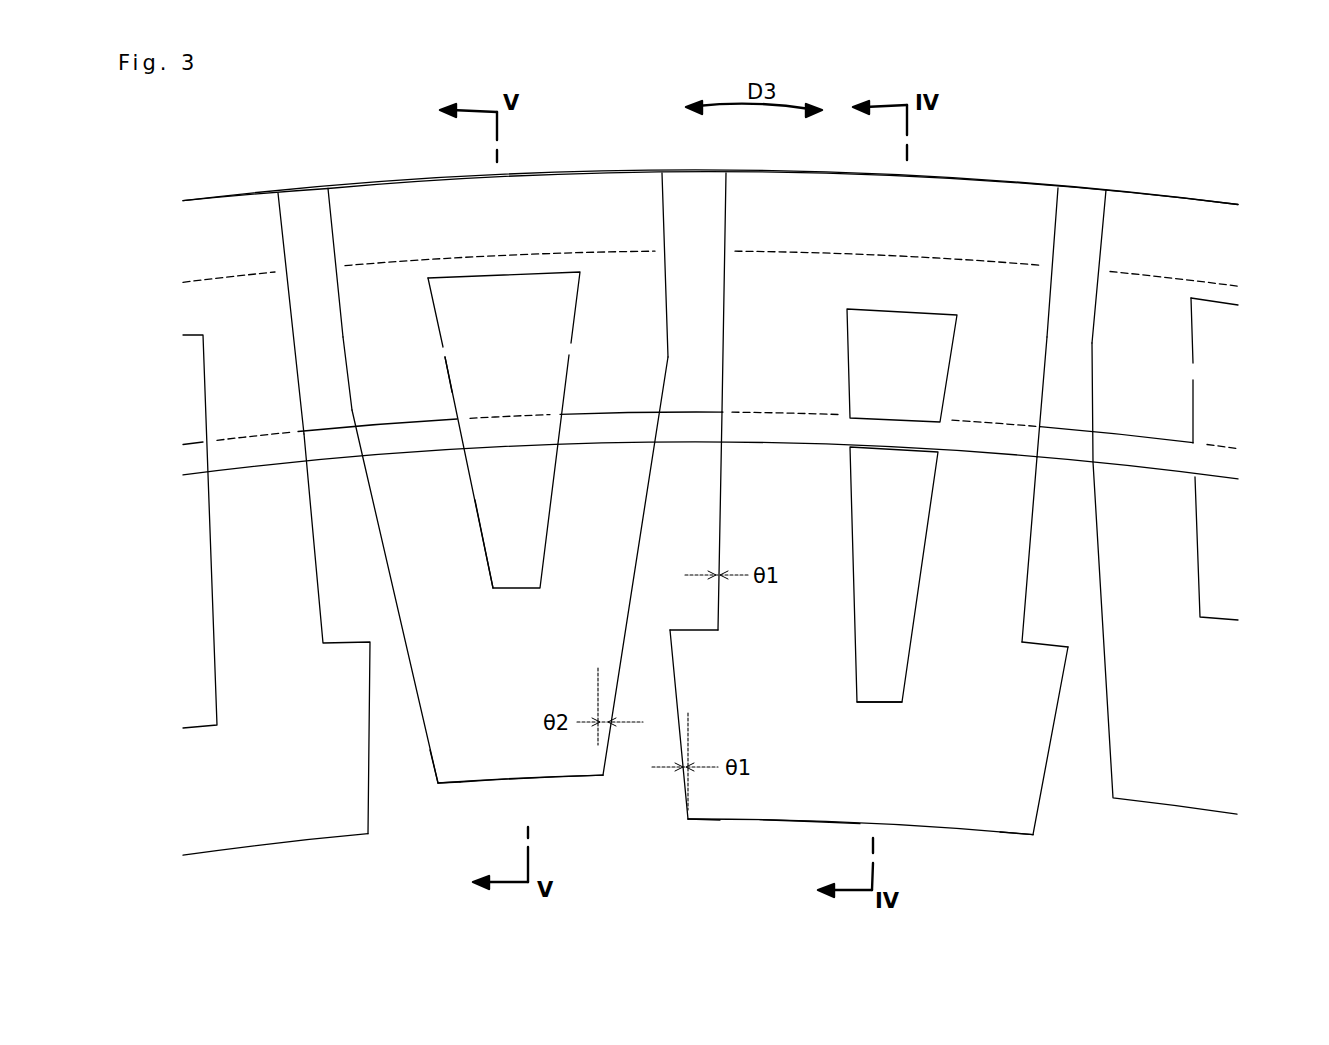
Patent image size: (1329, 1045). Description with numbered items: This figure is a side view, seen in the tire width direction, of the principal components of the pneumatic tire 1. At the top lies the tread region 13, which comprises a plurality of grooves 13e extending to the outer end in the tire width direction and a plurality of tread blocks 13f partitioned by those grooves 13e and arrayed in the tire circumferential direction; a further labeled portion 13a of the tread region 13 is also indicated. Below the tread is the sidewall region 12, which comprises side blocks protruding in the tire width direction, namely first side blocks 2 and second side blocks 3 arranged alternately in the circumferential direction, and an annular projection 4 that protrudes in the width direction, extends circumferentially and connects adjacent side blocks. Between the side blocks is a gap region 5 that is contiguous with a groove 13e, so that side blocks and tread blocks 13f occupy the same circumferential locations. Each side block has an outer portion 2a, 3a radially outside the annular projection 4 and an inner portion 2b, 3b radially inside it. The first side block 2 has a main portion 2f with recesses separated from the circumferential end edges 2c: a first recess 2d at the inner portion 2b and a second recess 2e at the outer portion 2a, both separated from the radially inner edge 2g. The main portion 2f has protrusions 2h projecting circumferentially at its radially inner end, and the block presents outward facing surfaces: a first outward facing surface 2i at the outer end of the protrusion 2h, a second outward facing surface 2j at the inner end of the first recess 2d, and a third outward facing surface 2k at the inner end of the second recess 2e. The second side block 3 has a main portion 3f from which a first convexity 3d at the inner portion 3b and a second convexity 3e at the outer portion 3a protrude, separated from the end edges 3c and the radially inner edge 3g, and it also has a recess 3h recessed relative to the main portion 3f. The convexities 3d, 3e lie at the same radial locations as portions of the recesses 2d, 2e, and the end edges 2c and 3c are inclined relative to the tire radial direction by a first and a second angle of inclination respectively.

The tire 1 is at (1228, 178).
The first side block 2 is at (272, 855).
The outer portion of first side block 2a is at (1047, 337).
The inner portion of first side block 2b is at (1028, 575).
The edge of circumferential end of first side block 2c is at (720, 472).
The first recess 2d is at (900, 547).
The second recess 2e is at (908, 378).
The main portion of first side block 2f is at (750, 815).
The edge of radially inner end of first side block 2g is at (805, 822).
The protrusion 2h is at (718, 823).
The first outward facing surface 2i is at (676, 612).
The second outward facing surface 2j is at (883, 700).
The third outward facing surface 2k is at (897, 415).
The second side block 3 is at (468, 797).
The outer portion of second side block 3a is at (341, 337).
The inner portion of second side block 3b is at (417, 685).
The edge of circumferential end of second side block 3c is at (669, 356).
The first convexity 3d is at (485, 548).
The second convexity 3e is at (448, 392).
The main portion of second side block 3f is at (440, 770).
The edge of radially inner end of second side block 3g is at (543, 780).
The recess of second side block 3h is at (515, 318).
The annular projection 4 is at (1218, 480).
The gap region 5 is at (347, 497).
The sidewall region 12 is at (1222, 695).
The tread region 13 is at (200, 184).
The yoke surface 13a is at (248, 195).
The groove 13e is at (303, 193).
The tread block 13f is at (415, 178).